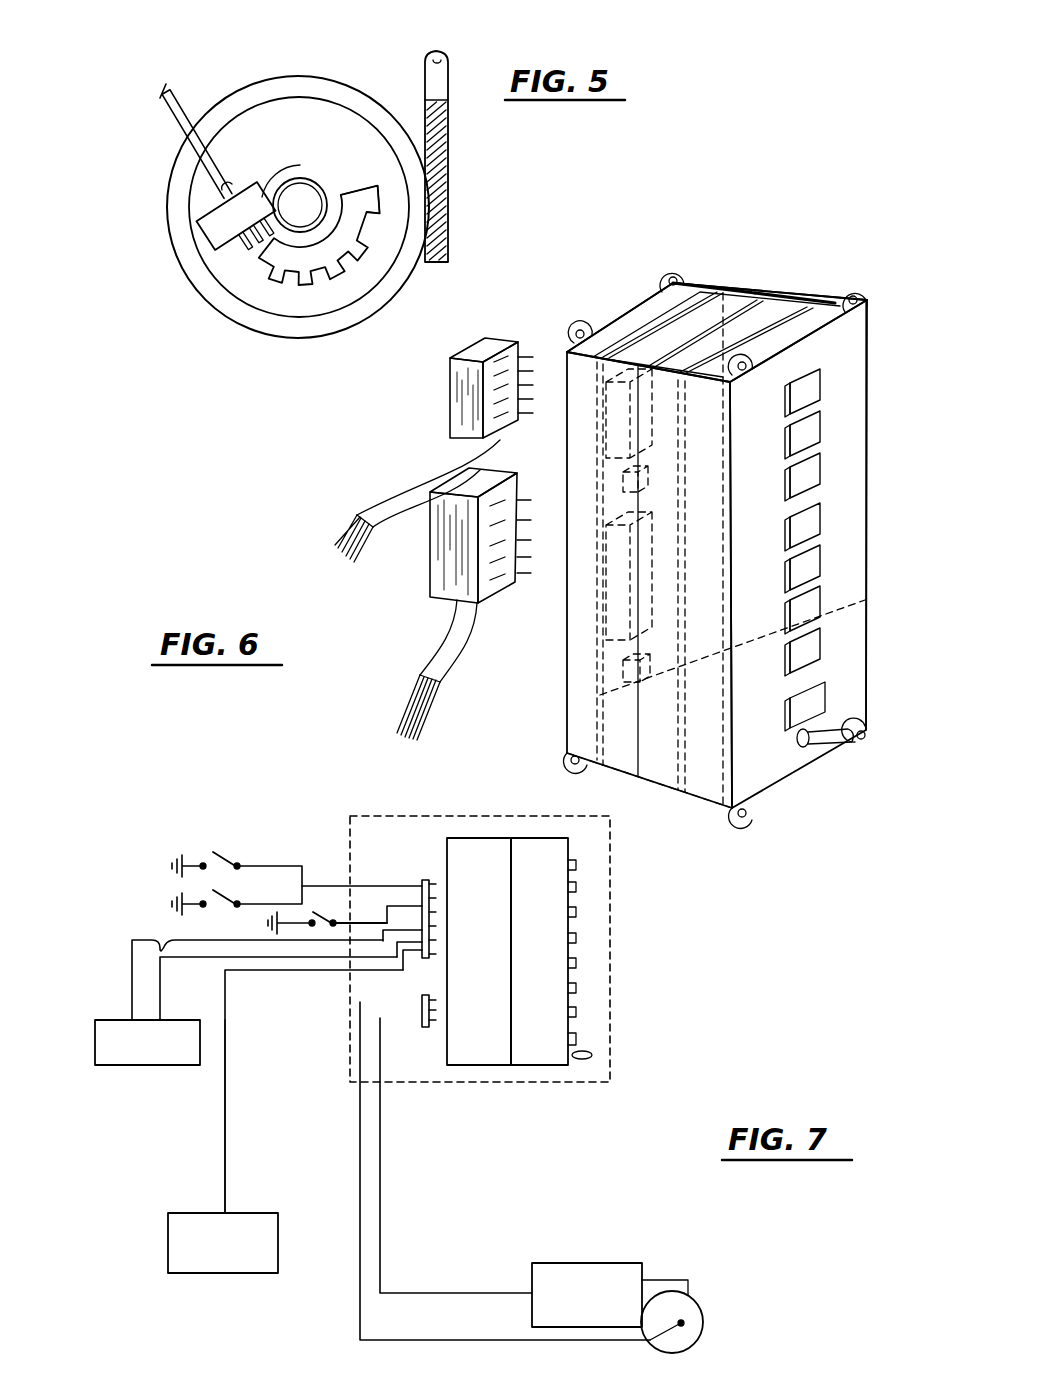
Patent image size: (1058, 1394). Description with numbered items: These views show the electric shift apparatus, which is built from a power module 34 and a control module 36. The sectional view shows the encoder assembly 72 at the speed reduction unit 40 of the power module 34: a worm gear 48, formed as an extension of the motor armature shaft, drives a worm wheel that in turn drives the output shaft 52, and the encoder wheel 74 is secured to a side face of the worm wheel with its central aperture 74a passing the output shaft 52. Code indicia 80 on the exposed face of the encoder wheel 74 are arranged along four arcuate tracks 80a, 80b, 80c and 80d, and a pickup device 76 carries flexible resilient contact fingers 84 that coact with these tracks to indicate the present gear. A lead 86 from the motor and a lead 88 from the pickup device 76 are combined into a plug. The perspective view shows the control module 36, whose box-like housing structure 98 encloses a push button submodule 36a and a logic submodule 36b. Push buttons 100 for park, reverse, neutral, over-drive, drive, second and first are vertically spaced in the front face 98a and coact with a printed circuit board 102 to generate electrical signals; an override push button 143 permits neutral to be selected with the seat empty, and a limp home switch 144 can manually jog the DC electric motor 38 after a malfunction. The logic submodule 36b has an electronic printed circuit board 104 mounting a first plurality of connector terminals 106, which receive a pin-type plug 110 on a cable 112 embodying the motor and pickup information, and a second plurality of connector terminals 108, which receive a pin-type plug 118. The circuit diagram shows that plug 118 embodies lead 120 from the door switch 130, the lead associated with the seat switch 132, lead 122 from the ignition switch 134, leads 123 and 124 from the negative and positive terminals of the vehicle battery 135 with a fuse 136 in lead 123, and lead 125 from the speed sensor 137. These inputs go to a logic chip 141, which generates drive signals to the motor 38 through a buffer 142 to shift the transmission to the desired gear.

In FIG. 7, the power module 34 is at (645, 1258).
In FIG. 7, the control module 36 is at (487, 834).
In FIG. 6, the push button submodule 36a is at (826, 300).
In FIG. 7, the push button submodule 36a is at (556, 930).
In FIG. 6, the logic submodule 36b is at (731, 302).
In FIG. 7, the logic submodule 36b is at (495, 930).
In FIG. 7, the DC electric motor 38 is at (584, 1262).
In FIG. 7, the speed reduction unit 40 is at (695, 1318).
In FIG. 5, the worm gear 48 is at (440, 172).
In FIG. 5, the output shaft 52 is at (299, 180).
In FIG. 5, the encoder assembly 72 is at (251, 76).
In FIG. 5, the encoder wheel 74 is at (352, 136).
In FIG. 5, the central aperture 74a is at (282, 190).
In FIG. 5, the pickup device 76 is at (228, 222).
In FIG. 5, the code indicia 80 is at (288, 292).
In FIG. 5, the arcuate track 80a is at (370, 207).
In FIG. 5, the arcuate track 80b is at (352, 206).
In FIG. 5, the arcuate track 80c is at (325, 205).
In FIG. 5, the arcuate track 80d is at (299, 205).
In FIG. 5, the contact fingers 84 is at (240, 252).
In FIG. 7, the lead 86 is at (382, 1272).
In FIG. 5, the lead 88 is at (180, 128).
In FIG. 7, the lead 88 is at (362, 1292).
In FIG. 6, the housing structure 98 is at (580, 722).
In FIG. 6, the front face 98a is at (860, 545).
In FIG. 6, the push buttons 100 is at (820, 392).
In FIG. 7, the push buttons 100 is at (578, 865).
In FIG. 6, the printed circuit board 102 is at (790, 315).
In FIG. 6, the electronic printed circuit board 104 is at (694, 292).
In FIG. 6, the first plurality of connector terminals 106 is at (606, 590).
In FIG. 6, the second plurality of connector terminals 108 is at (606, 422).
In FIG. 6, the pin-type plug 110 is at (447, 555).
In FIG. 7, the pin-type plug 110 is at (422, 1000).
In FIG. 6, the cable 112 is at (452, 632).
In FIG. 6, the pin-type plug 118 is at (470, 345).
In FIG. 7, the lead 120 is at (270, 866).
In FIG. 7, the lead 122 is at (375, 910).
In FIG. 7, the lead 123 is at (130, 975).
In FIG. 7, the lead 124 is at (162, 1010).
In FIG. 7, the lead 125 is at (225, 1160).
In FIG. 7, the switch 130 is at (206, 850).
In FIG. 7, the switch 132 is at (212, 900).
In FIG. 7, the ignition switch 134 is at (299, 1022).
In FIG. 7, the vehicle battery 135 is at (132, 1068).
In FIG. 7, the fuse 136 is at (158, 932).
In FIG. 7, the speed sensor 137 is at (168, 1245).
In FIG. 6, the logic chip 141 is at (622, 485).
In FIG. 6, the buffer 142 is at (622, 678).
In FIG. 6, the override push button 143 is at (815, 706).
In FIG. 7, the override push button 143 is at (576, 1040).
In FIG. 6, the limp home switch 144 is at (828, 745).
In FIG. 7, the limp home switch 144 is at (592, 1058).